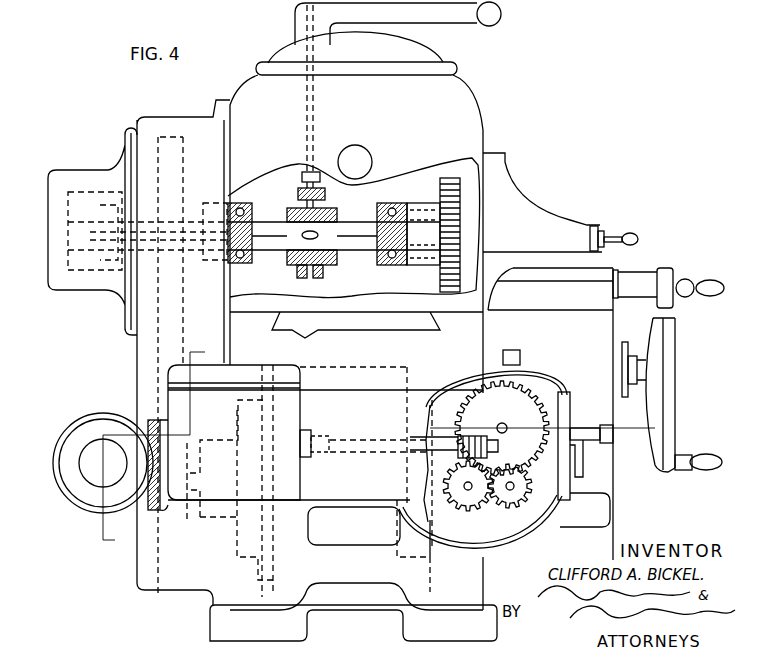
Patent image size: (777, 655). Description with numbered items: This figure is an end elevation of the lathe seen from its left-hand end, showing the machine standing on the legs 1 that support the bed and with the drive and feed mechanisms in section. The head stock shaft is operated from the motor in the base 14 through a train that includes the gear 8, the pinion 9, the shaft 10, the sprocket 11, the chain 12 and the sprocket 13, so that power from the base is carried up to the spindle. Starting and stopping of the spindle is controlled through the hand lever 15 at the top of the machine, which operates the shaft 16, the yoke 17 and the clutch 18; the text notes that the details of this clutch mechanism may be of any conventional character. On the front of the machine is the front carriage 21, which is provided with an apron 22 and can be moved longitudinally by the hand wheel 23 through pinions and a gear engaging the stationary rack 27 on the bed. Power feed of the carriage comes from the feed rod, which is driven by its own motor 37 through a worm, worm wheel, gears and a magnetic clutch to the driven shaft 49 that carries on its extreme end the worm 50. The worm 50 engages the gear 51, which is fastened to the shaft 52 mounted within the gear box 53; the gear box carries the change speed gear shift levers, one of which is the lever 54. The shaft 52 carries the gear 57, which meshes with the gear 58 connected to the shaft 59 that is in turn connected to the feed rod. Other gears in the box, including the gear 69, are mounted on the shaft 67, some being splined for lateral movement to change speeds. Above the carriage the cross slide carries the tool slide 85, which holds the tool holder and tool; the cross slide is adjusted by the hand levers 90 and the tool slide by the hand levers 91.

The legs 1 is at (210, 627).
The gear 8 is at (628, 437).
The pinion 9 is at (110, 543).
The shaft 10 is at (353, 223).
The sprocket 11 is at (188, 140).
The chain 12 is at (158, 350).
The sprocket 13 is at (187, 522).
The motor in the base 14 is at (355, 366).
The hand lever 15 is at (484, 21).
The shaft 16 is at (300, 166).
The yoke 17 is at (298, 191).
The clutch 18 is at (143, 160).
The front carriage 21 is at (597, 303).
The apron 22 is at (600, 360).
The hand wheel 23 is at (668, 430).
The stationary rack 27 is at (520, 364).
The motor 37 is at (62, 494).
The driven shaft 49 is at (338, 438).
The worm 50 is at (481, 437).
The gear 51 is at (445, 515).
The shaft 52 is at (463, 483).
The gear box 53 is at (540, 385).
The change speed gear shift lever 54 is at (573, 428).
The gear 57 is at (418, 492).
The gear 58 is at (472, 508).
The shaft 59 is at (517, 487).
The shaft 67 is at (506, 423).
The gear 69 is at (543, 412).
The tool slide 85 is at (502, 170).
The hand levers 90 is at (688, 283).
The hand levers 91 is at (627, 233).